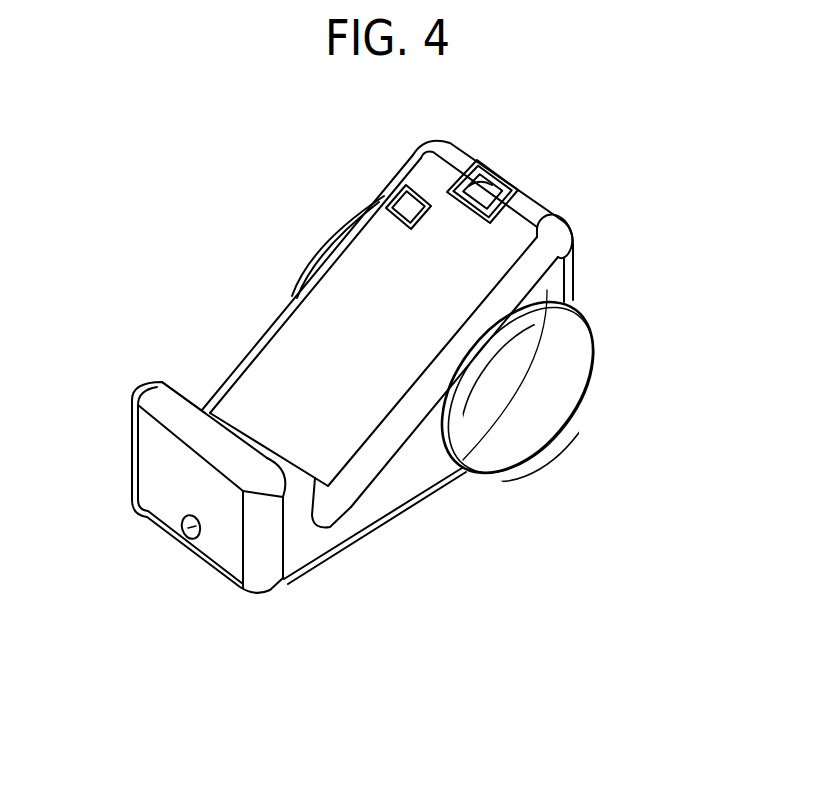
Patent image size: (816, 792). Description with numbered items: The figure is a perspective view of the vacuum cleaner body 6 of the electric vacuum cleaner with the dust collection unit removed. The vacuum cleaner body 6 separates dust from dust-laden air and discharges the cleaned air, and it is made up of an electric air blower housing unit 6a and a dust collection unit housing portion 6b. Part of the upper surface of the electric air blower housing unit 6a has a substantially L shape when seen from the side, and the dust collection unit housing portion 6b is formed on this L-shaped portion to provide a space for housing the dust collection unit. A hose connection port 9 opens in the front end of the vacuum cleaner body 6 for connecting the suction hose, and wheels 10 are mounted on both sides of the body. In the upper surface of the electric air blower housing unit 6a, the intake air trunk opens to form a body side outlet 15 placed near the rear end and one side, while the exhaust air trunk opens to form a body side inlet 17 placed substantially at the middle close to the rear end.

The vacuum cleaner body 6 is at (392, 569).
The electric air blower housing unit 6a is at (463, 460).
The dust collection unit housing portion 6b is at (351, 405).
The hose connection port 9 is at (182, 525).
The wheels 10 is at (531, 427).
The body side outlet 15 is at (405, 202).
The body side inlet 17 is at (483, 187).